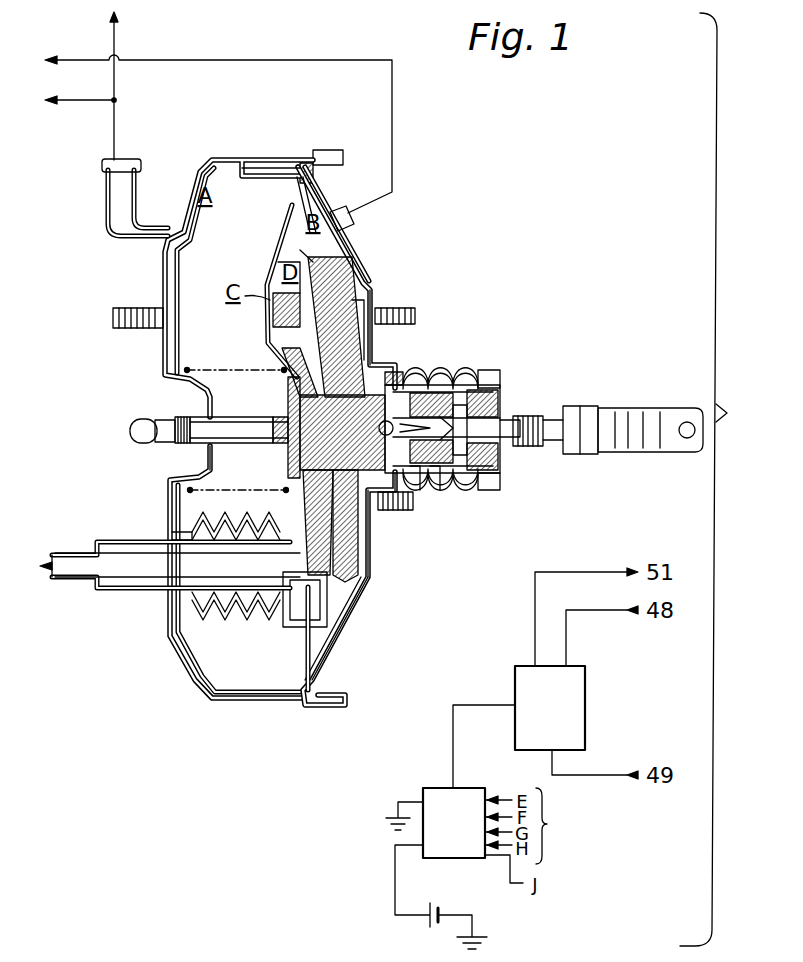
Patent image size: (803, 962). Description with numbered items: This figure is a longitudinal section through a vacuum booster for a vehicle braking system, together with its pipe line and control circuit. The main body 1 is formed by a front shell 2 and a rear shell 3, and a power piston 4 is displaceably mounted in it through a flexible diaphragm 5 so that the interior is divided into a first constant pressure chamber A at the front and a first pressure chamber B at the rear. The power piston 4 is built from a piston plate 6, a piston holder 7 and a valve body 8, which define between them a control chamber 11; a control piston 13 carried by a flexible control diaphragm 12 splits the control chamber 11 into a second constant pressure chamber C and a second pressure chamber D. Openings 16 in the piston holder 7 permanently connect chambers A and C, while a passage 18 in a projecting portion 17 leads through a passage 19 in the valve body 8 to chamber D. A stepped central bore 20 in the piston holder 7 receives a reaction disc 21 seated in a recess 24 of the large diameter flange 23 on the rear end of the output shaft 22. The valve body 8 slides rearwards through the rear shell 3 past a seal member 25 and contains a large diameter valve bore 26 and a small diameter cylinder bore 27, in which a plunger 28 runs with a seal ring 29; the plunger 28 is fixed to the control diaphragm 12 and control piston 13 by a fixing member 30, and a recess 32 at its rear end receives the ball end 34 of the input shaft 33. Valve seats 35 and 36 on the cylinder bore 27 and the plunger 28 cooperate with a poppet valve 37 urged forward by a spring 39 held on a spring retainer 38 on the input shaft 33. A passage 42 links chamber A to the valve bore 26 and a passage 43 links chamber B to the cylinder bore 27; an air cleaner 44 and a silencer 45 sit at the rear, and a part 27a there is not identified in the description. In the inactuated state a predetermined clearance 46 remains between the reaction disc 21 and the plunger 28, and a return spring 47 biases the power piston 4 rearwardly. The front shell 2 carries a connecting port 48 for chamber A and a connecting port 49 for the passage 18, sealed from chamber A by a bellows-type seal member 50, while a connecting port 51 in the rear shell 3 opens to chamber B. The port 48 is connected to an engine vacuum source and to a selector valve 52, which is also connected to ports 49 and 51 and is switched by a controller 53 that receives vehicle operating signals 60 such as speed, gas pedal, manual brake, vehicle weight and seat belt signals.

The main body 1 is at (218, 158).
The front shell 2 is at (190, 175).
The rear shell 3 is at (346, 244).
The power piston 4 is at (268, 274).
The flexible diaphragm 5 is at (258, 177).
The piston plate 6 is at (300, 216).
The piston holder 7 is at (273, 316).
The valve body 8 is at (358, 272).
The control chamber 11 is at (360, 308).
The control diaphragm 12 is at (372, 572).
The control piston 13 is at (303, 525).
The openings 16 is at (292, 365).
The projecting portion 17 is at (226, 592).
The passage 18 is at (292, 580).
The passage 19 is at (350, 588).
The stepped central bore 20 is at (288, 398).
The reaction disc 21 is at (290, 452).
The output shaft 22 is at (240, 417).
The large diameter flange 23 is at (290, 470).
The recess 24 is at (210, 470).
The seal member 25 is at (400, 360).
The valve bore 26 is at (490, 472).
The cylinder bore 27 is at (442, 494).
The boot 27a is at (410, 368).
The plunger 28 is at (371, 540).
The seal ring 29 is at (395, 329).
The fixing member 30 is at (364, 584).
The recess 32 is at (440, 490).
The input shaft 33 is at (515, 440).
The ball end 34 is at (418, 492).
The valve seat 35 is at (440, 376).
The valve seat 36 is at (480, 492).
The poppet valve 37 is at (425, 376).
The spring retainer 38 is at (495, 446).
The spring 39 is at (460, 372).
The passage 42 is at (368, 288).
The passage 43 is at (388, 510).
The air cleaner 44 is at (476, 390).
The silencer 45 is at (496, 402).
The predetermined clearance 46 is at (280, 440).
The return spring 47 is at (190, 369).
The connecting port 48 is at (102, 204).
The connecting port 49 is at (120, 588).
The seal member 50 is at (246, 602).
The connecting port 51 is at (345, 213).
The selector valve 52 is at (586, 705).
The controller 53 is at (450, 859).
The signals 60 is at (558, 826).